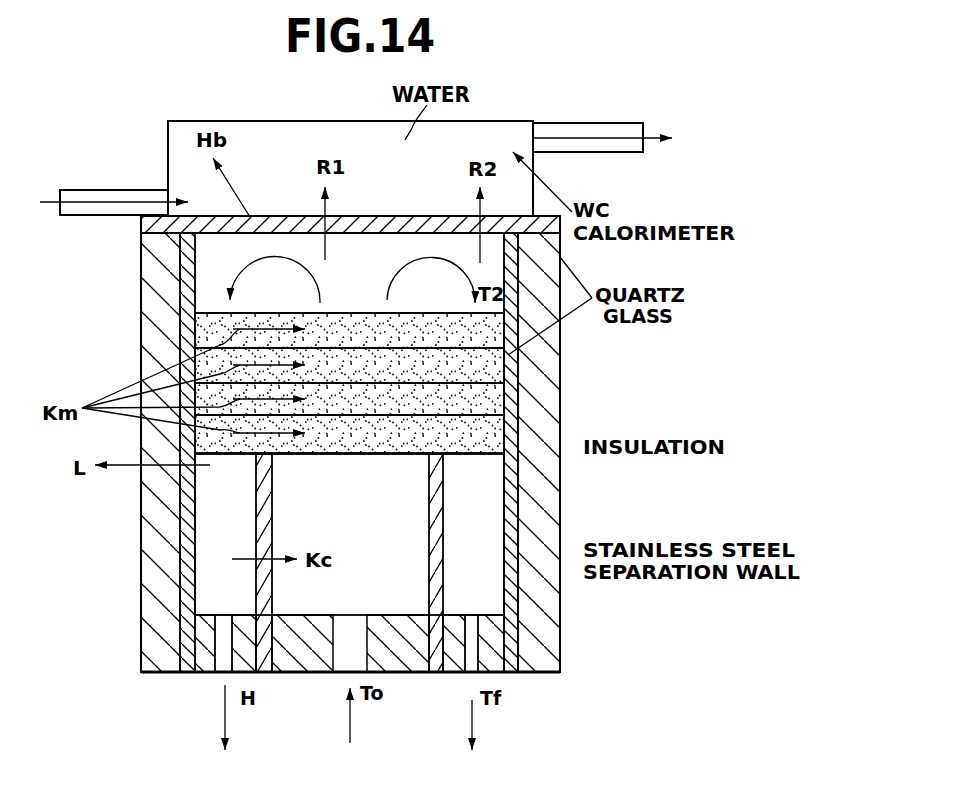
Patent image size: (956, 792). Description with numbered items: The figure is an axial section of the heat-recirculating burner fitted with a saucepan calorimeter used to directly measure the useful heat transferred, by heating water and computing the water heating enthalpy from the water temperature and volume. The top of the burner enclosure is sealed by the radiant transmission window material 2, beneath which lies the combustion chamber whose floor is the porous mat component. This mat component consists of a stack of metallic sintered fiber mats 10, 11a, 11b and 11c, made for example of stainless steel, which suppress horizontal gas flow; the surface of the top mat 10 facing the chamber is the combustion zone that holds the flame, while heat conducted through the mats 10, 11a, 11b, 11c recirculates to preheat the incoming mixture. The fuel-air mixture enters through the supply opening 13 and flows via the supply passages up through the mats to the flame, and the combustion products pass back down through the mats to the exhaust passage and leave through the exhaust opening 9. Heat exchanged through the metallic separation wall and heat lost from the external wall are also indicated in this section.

The radiant transmission window material 2 is at (390, 216).
The exhaust opening 9 is at (222, 672).
The top metallic sintered fiber mat 10 is at (361, 313).
The metallic sintered fiber mat 11a is at (490, 370).
The metallic sintered fiber mat 11b is at (488, 407).
The metallic sintered fiber mat 11c is at (368, 455).
The supply opening 13 is at (340, 672).